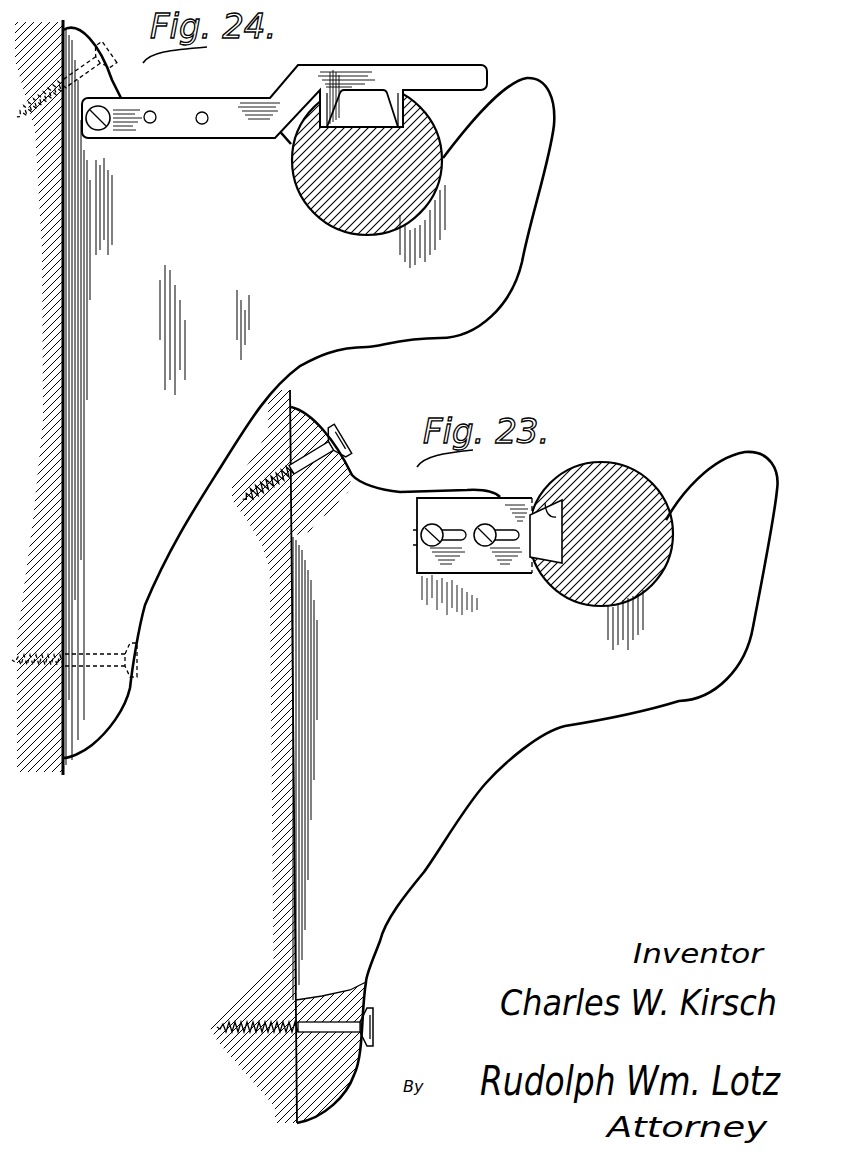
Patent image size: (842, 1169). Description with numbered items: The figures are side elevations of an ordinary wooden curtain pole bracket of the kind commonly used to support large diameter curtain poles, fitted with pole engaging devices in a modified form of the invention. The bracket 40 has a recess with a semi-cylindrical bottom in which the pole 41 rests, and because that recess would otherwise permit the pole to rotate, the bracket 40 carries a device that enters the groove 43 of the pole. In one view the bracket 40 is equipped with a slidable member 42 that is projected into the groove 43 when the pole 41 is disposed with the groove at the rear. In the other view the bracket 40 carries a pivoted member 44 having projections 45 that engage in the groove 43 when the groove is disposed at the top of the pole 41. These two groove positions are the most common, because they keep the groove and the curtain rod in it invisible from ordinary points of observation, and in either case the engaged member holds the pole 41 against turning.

In FIG. 24, the bracket 40 is at (541, 202).
In FIG. 23, the bracket 40 is at (710, 682).
In FIG. 24, the pole 41 is at (450, 107).
In FIG. 23, the pole 41 is at (655, 492).
In FIG. 23, the slidable member 42 is at (513, 490).
In FIG. 24, the groove 43 is at (357, 125).
In FIG. 23, the groove 43 is at (548, 505).
In FIG. 24, the pivoted member 44 is at (268, 98).
In FIG. 24, the projections 45 is at (328, 125).